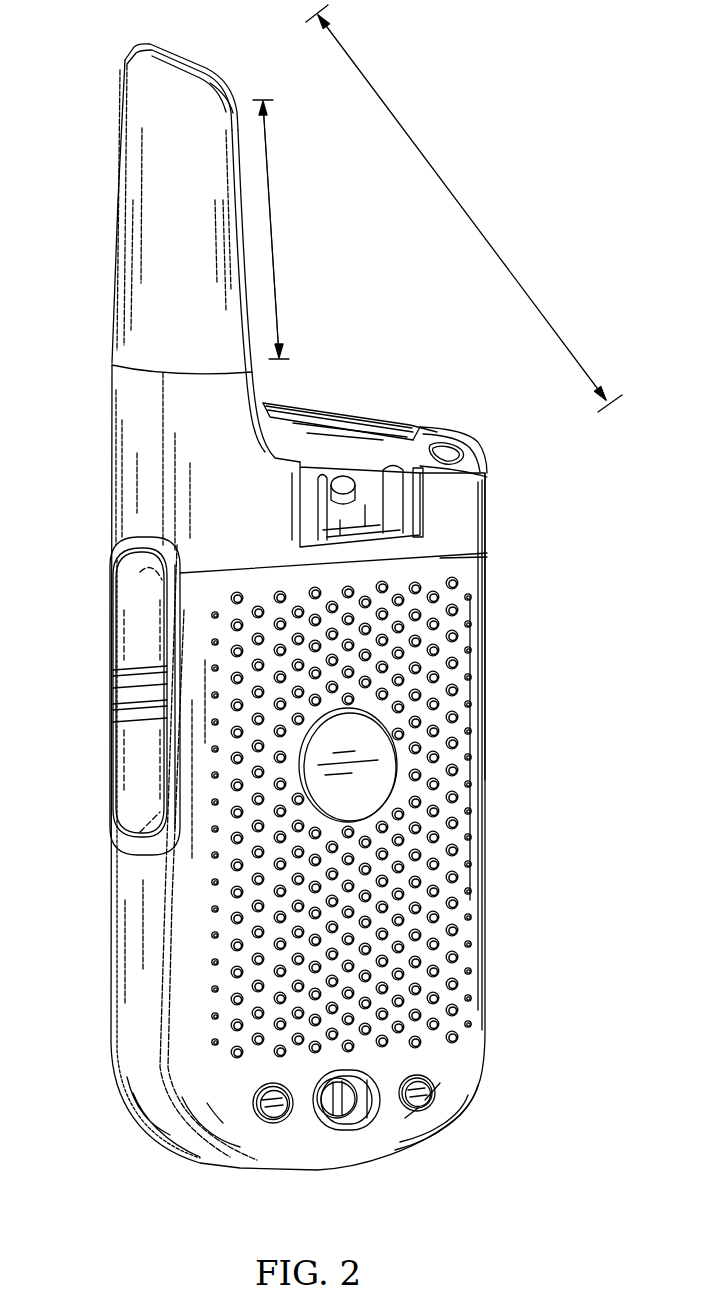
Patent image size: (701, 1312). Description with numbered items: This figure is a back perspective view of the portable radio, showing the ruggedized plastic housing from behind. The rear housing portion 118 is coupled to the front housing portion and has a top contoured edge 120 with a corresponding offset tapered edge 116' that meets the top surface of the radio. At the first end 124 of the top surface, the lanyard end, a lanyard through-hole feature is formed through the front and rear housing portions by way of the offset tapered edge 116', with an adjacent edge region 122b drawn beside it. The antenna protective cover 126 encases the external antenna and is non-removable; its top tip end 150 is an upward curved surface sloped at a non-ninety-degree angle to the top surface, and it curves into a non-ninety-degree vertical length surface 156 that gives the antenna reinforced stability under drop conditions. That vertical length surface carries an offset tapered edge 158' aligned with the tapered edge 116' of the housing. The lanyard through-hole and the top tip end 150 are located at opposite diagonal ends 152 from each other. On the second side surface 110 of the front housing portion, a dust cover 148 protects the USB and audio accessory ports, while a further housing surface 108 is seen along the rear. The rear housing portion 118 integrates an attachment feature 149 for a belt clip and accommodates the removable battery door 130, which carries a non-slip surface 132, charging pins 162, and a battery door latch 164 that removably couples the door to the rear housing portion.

The housing rear portion 108 is at (487, 990).
The second side surface 110 is at (133, 1040).
The offset tapered edge 116' is at (472, 419).
The rear housing portion 118 is at (500, 533).
The top contoured edge 120 is at (476, 418).
The lip 122b is at (455, 463).
The first end of the top surface 124 is at (470, 452).
The antenna protective cover 126 is at (130, 213).
The battery door 130 is at (510, 672).
The non-slip surface 132 is at (442, 797).
The dust cover 148 is at (135, 642).
The attachment feature 149 is at (330, 523).
The top tip end 150 is at (180, 58).
The opposite diagonal ends 152 is at (450, 190).
The non-90 degree vertical length surface 156 is at (272, 229).
The offset tapered edge 158' is at (297, 229).
The charging pins 162 is at (262, 1123).
The battery door latch 164 is at (330, 1123).